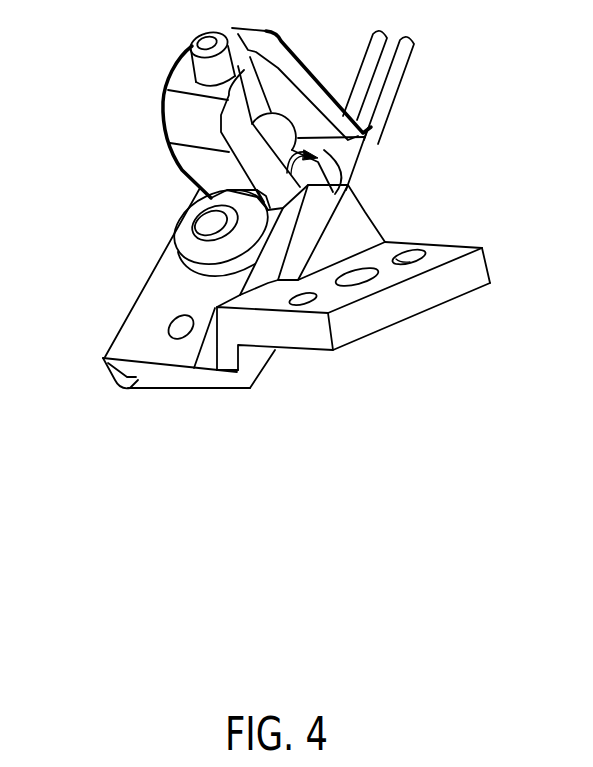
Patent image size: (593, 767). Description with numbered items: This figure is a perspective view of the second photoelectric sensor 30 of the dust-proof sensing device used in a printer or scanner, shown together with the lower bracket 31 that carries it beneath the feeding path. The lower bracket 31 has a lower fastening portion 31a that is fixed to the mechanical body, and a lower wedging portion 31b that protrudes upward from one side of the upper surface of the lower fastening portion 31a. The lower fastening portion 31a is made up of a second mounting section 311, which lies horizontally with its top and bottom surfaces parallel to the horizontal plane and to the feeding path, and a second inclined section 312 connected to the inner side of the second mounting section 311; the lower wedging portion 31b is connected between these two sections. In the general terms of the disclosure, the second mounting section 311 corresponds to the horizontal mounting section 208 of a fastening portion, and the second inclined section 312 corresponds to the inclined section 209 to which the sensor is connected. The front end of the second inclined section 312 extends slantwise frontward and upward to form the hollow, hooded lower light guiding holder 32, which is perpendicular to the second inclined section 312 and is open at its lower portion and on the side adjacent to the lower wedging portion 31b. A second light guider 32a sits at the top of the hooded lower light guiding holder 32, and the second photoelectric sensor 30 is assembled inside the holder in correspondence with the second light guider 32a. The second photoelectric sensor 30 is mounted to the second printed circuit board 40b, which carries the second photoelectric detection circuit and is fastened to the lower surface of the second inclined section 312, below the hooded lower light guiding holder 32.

The second photoelectric sensor 30 is at (346, 179).
The lower bracket 31 is at (160, 388).
The lower fastening portion 31a is at (464, 283).
The lower wedging portion 31b is at (364, 232).
The hooded lower light guiding holder 32 is at (303, 70).
The second light guider 32a is at (196, 46).
The second printed circuit board 40b is at (363, 140).
The mounting section 208 is at (467, 302).
The inclined section 209 is at (160, 248).
The second mounting section 311 is at (337, 300).
The second inclined section 312 is at (158, 283).